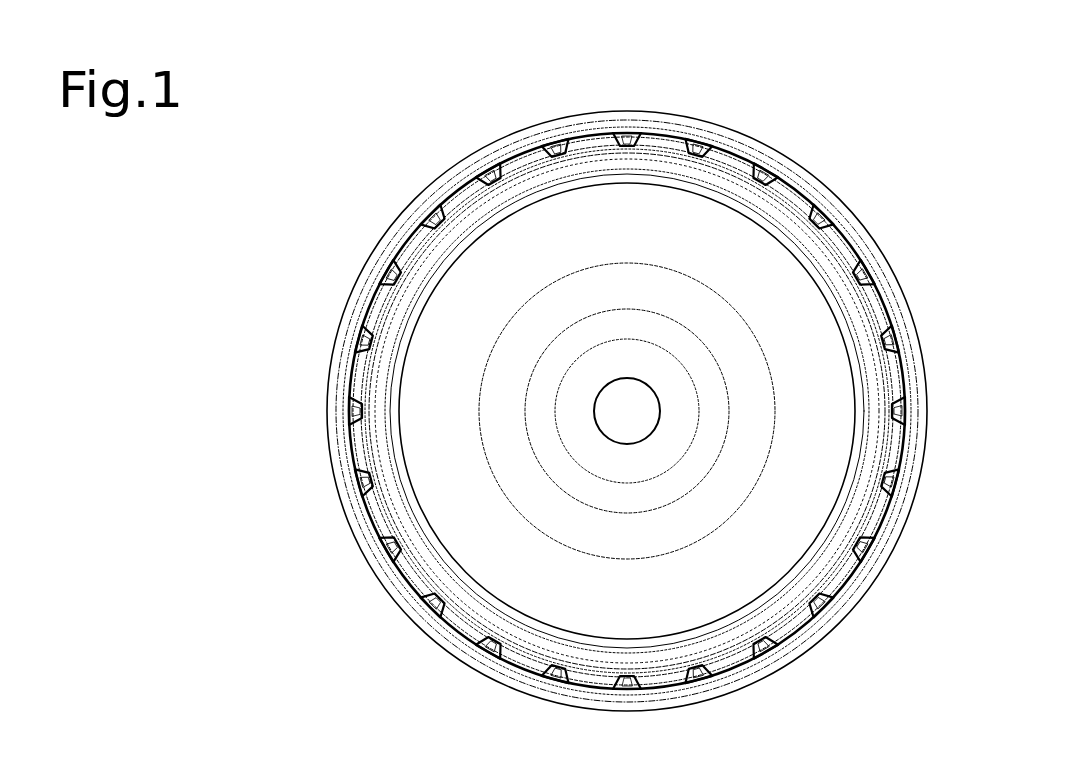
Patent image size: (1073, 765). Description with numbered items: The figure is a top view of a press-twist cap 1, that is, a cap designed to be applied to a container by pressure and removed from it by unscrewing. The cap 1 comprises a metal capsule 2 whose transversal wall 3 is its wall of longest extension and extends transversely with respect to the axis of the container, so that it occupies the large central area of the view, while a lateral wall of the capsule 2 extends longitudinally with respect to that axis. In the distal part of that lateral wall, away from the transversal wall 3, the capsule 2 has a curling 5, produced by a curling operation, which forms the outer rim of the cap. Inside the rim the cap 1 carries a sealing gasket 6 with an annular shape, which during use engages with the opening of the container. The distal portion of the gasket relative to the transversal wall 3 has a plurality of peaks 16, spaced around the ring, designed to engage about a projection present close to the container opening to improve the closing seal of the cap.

The cap 1 is at (859, 136).
The metal capsule 2 is at (331, 431).
The transversal wall 3 is at (505, 551).
The curling 5 is at (451, 166).
The sealing gasket 6 is at (838, 267).
The peaks 16 is at (895, 405).